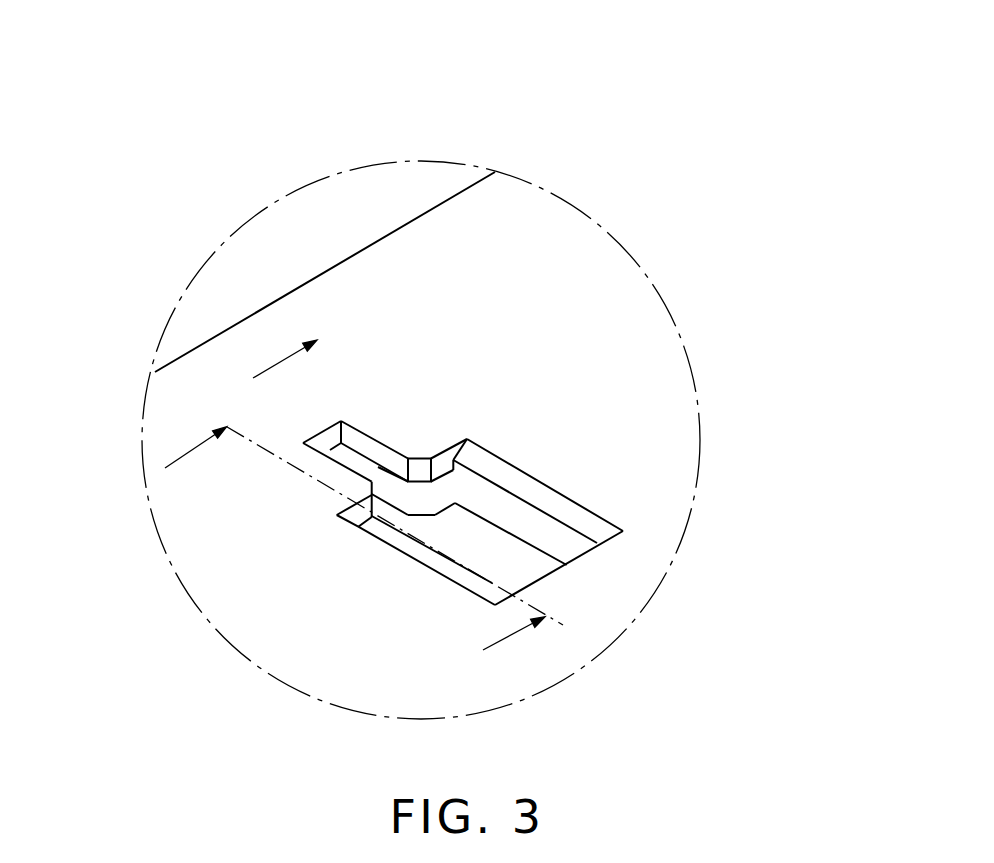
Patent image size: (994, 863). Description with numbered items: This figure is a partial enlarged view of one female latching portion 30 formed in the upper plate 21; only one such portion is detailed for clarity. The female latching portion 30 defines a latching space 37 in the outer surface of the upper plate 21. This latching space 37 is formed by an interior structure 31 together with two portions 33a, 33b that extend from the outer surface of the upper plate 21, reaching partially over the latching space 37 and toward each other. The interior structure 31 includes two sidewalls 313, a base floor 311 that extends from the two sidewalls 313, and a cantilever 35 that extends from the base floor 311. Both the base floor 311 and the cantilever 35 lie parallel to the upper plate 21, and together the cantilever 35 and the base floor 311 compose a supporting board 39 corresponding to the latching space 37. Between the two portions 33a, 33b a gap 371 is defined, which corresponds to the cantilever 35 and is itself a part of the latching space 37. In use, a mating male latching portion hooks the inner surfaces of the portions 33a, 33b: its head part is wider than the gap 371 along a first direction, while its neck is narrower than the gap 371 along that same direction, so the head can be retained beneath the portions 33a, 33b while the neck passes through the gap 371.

The female latching portion 30 is at (418, 34).
The upper plate 21 is at (583, 277).
The latching space 37 is at (460, 572).
The gap 371 is at (352, 457).
The supporting board 39 is at (843, 360).
The interior structure 31 is at (793, 435).
The base floor 311 is at (503, 585).
The sidewalls 313 is at (543, 528).
The portion 33a is at (352, 473).
The portion 33b is at (420, 452).
The cantilever 35 is at (383, 510).